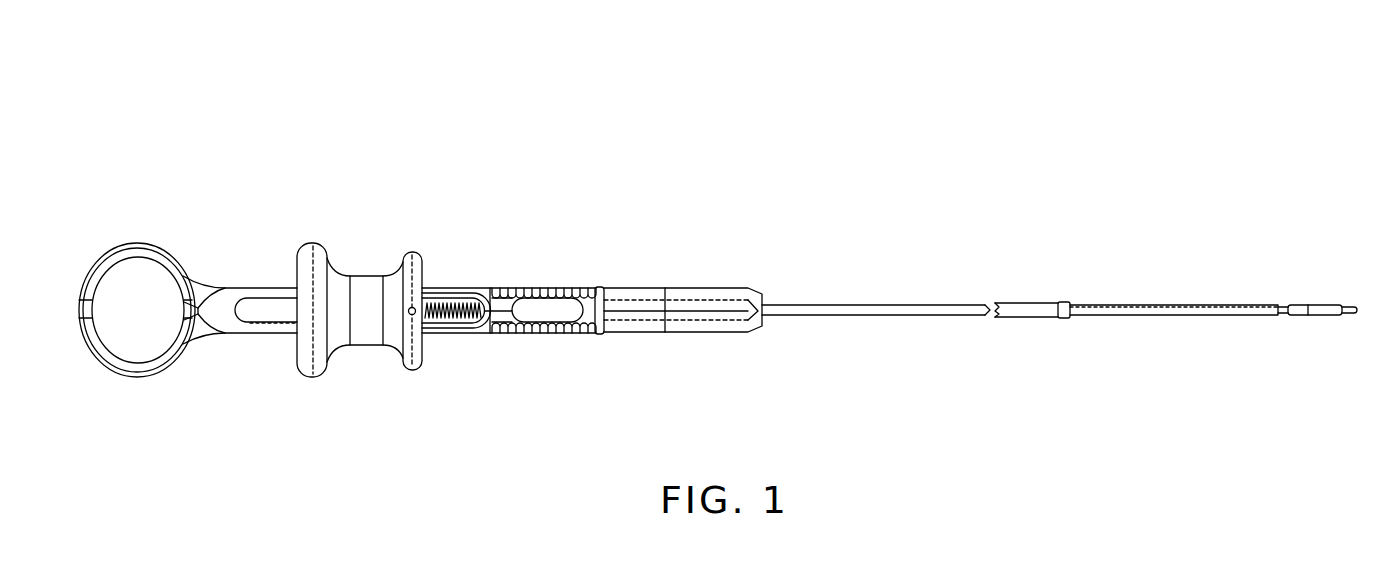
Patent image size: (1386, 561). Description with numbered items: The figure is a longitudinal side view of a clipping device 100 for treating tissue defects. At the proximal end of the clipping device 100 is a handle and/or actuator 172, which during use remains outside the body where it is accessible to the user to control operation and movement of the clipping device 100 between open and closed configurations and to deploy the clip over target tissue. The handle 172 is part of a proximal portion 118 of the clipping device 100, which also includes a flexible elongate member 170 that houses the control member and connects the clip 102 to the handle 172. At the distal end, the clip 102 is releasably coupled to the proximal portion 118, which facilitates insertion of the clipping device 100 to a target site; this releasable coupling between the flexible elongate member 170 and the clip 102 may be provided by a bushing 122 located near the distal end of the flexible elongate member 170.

The clipping device 100 is at (716, 126).
The handle 172 is at (238, 288).
The proximal portion 118 is at (545, 254).
The flexible elongate member 170 is at (1148, 305).
The clip 102 is at (1317, 282).
The bushing 122 is at (1288, 318).